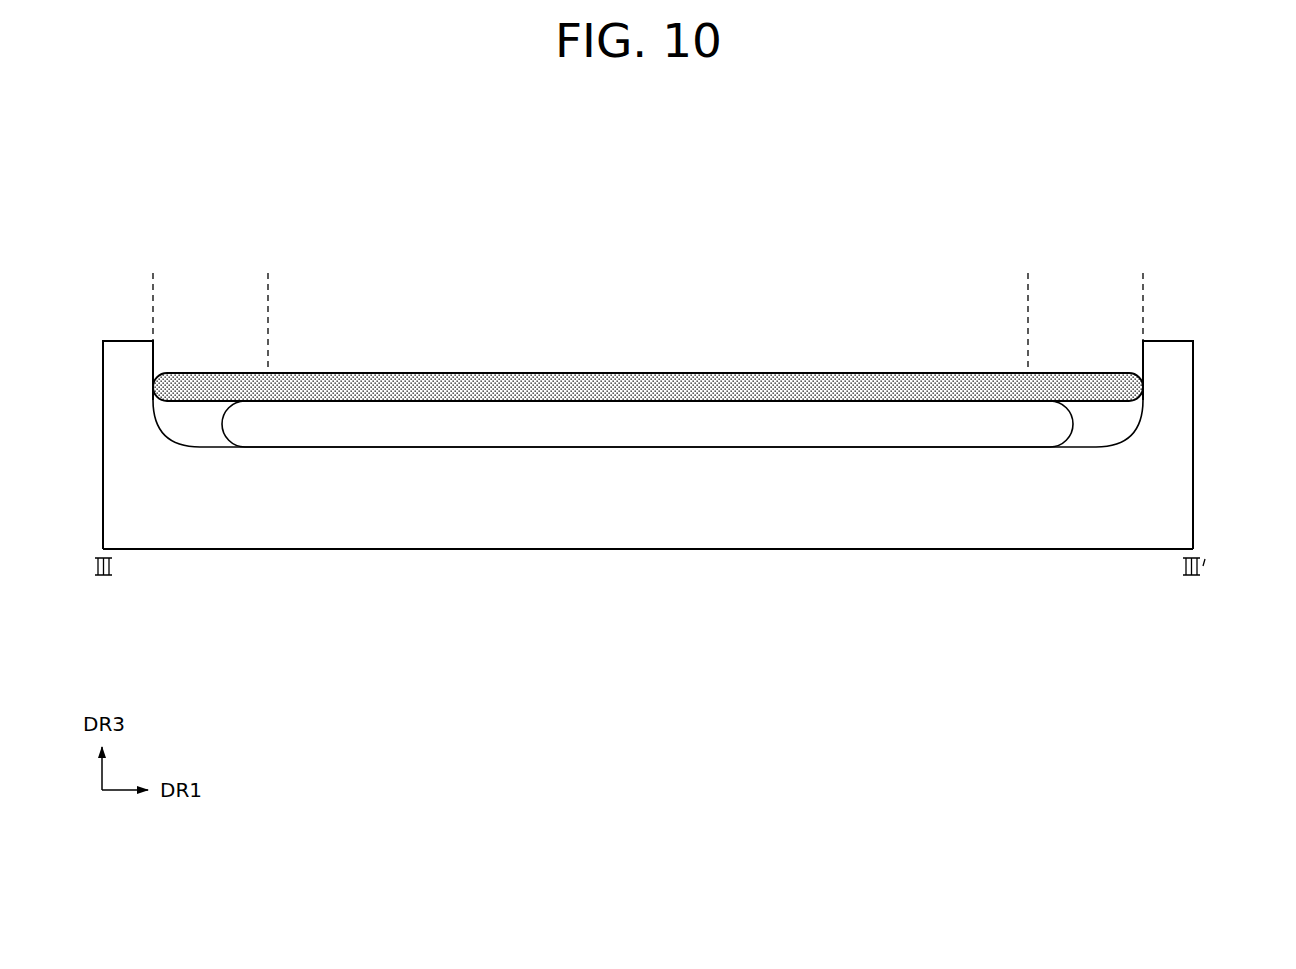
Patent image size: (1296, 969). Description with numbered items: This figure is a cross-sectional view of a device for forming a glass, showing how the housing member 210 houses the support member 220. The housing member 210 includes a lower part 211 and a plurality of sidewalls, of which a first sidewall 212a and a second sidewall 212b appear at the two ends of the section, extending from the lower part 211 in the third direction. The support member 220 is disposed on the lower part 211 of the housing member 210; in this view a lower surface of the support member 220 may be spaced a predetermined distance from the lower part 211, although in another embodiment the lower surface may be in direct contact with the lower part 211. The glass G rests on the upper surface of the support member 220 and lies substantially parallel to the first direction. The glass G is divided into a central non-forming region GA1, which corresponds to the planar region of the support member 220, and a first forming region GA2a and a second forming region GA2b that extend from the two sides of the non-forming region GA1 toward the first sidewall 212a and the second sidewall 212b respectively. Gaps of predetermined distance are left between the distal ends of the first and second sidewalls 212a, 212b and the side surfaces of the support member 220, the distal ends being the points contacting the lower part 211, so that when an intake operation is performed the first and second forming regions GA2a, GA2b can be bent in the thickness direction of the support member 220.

The housing member 210 is at (1210, 447).
The lower part 211 is at (713, 551).
The first sidewall 212a is at (168, 436).
The second sidewall 212b is at (1125, 438).
The support member 220 is at (458, 428).
The glass G is at (738, 382).
The non-forming region GA1 is at (1017, 280).
The first forming region GA2a is at (257, 280).
The second forming region GA2b is at (1132, 280).